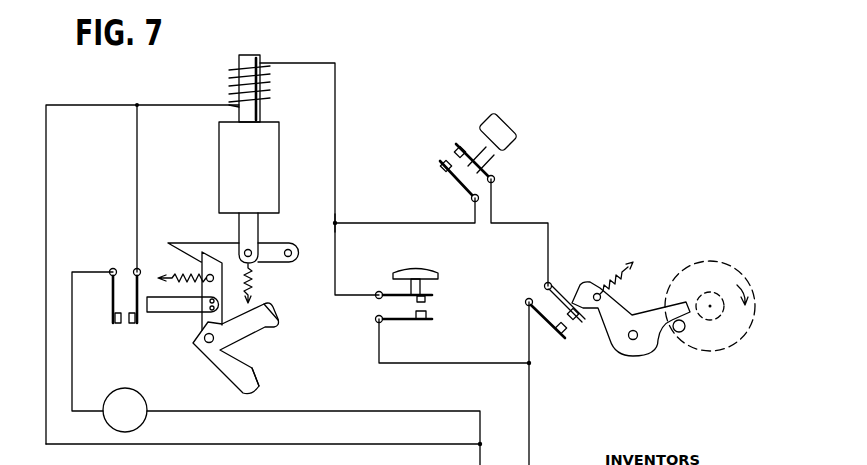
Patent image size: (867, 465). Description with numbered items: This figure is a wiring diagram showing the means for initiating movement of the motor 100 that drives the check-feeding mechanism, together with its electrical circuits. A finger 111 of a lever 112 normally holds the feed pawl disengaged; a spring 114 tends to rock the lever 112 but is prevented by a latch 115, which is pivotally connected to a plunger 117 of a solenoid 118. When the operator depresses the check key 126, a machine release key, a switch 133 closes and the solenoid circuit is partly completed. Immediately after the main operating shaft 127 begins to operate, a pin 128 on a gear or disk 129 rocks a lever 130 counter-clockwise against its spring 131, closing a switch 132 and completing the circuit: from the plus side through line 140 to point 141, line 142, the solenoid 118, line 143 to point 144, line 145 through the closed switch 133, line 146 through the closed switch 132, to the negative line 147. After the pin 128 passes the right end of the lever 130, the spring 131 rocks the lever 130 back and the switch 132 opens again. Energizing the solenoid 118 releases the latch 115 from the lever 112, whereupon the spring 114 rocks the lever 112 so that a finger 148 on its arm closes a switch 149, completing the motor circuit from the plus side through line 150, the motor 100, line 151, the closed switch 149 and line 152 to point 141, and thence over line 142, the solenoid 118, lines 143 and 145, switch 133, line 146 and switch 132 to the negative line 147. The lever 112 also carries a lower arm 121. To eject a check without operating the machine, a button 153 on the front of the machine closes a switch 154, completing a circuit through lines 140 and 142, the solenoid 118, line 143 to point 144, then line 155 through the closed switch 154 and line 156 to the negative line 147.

The motor 100 is at (118, 392).
The finger 111 is at (278, 323).
The lever 112 is at (197, 338).
The spring 114 is at (175, 273).
The latch 115 is at (200, 218).
The plunger 117 is at (253, 232).
The solenoid 118 is at (270, 153).
The lower arm of lever 121 is at (248, 383).
The check key 126 is at (502, 128).
The main operating shaft 127 is at (712, 294).
The pin 128 is at (680, 333).
The gear or disk 129 is at (690, 267).
The lever 130 is at (628, 345).
The spring 131 is at (610, 282).
The switch 132 is at (568, 333).
The switch 133 is at (443, 160).
The line 140 is at (155, 445).
The point 141 is at (137, 104).
The line 142 is at (160, 105).
The line 143 is at (337, 97).
The point 144 is at (336, 222).
The line 145 is at (406, 222).
The line 146 is at (517, 222).
The negative line 147 is at (530, 403).
The finger 148 is at (183, 305).
The switch 149 is at (118, 327).
The line 150 is at (338, 412).
The line 151 is at (88, 272).
The line 152 is at (138, 183).
The button 153 is at (425, 273).
The switch 154 is at (430, 317).
The line 155 is at (337, 252).
The line 156 is at (443, 362).